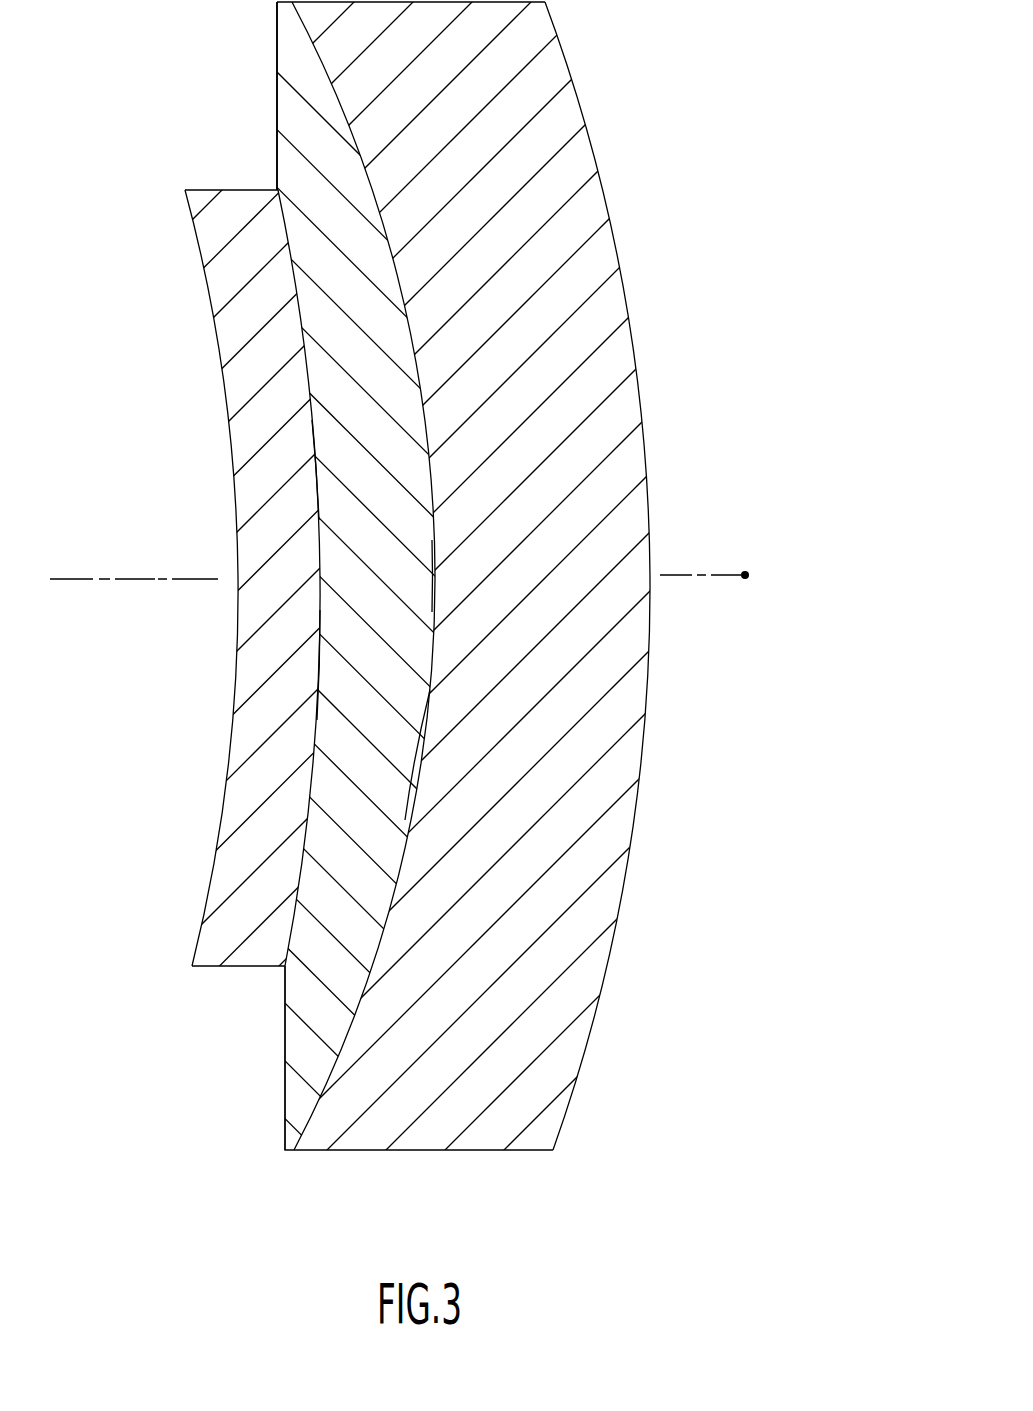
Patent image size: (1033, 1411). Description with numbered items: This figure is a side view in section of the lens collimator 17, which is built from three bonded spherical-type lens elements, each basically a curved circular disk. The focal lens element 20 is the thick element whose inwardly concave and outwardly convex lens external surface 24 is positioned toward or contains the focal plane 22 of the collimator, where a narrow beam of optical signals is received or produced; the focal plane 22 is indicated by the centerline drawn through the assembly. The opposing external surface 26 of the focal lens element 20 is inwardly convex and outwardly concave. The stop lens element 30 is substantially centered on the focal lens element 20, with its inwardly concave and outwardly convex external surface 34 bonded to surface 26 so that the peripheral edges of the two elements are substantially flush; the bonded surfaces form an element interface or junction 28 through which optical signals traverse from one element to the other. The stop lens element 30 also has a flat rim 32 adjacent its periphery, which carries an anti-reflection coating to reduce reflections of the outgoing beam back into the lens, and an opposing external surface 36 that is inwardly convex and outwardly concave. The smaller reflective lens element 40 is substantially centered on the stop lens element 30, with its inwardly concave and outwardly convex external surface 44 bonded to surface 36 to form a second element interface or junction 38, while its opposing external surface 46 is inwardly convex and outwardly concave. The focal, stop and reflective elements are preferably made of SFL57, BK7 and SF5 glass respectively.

The lens collimator 17 is at (802, 284).
The focal lens element 20 is at (615, 265).
The focal plane 22 is at (745, 574).
The lens external surface 24 is at (648, 462).
The opposing external surface 26 is at (426, 742).
The element interface or junction 28 is at (440, 575).
The stop lens element 30 is at (278, 165).
The flat rim 32 is at (277, 100).
The external surface 34 is at (430, 688).
The opposing external surface 36 is at (320, 664).
The element interface or junction 38 is at (322, 474).
The reflective lens element 40 is at (215, 337).
The external surface 44 is at (305, 778).
The opposing external surface 46 is at (232, 713).